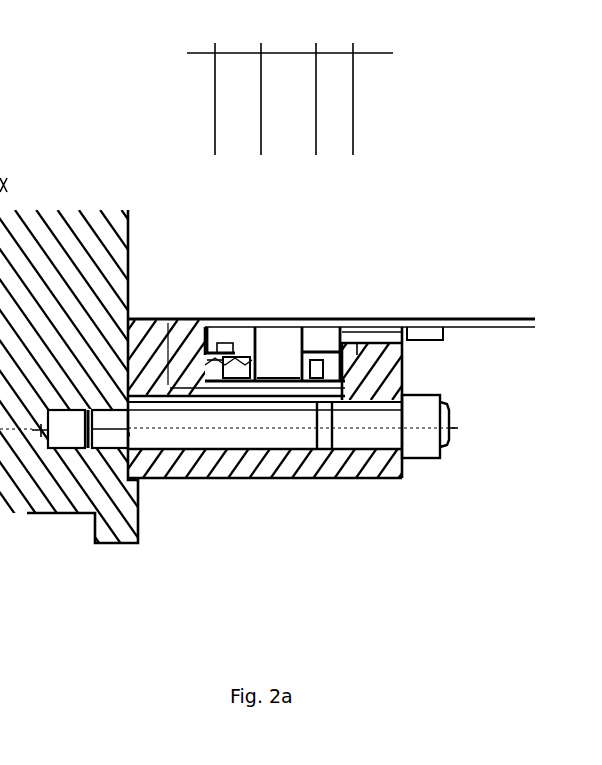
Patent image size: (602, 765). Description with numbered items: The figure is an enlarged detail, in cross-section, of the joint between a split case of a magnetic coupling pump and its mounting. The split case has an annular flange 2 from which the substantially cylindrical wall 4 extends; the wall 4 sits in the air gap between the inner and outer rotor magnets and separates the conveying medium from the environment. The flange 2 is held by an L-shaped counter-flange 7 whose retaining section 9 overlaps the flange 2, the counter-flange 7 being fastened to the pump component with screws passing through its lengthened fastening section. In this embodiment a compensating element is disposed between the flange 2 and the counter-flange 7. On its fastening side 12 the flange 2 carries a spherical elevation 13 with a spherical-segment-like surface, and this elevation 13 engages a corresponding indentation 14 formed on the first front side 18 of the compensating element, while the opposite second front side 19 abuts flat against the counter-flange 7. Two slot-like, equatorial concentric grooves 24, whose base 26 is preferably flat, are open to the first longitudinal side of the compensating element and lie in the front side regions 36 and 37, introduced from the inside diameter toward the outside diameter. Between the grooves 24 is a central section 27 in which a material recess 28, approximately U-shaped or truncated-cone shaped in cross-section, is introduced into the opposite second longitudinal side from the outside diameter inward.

The flange 2 is at (152, 337).
The cylindrical wall 4 is at (483, 314).
The counter-flange 7 is at (183, 480).
The retaining section 9 is at (393, 368).
The fastening side 12 is at (183, 383).
The elevation 13 is at (210, 383).
The indentation 14 is at (205, 365).
The first front side 18 is at (200, 388).
The second front side 19 is at (357, 340).
The slot-like concentric grooves 24 is at (315, 378).
The groove base 26 is at (243, 396).
The material recess 28 is at (278, 352).
The central section 27 is at (288, 91).
The front side region 36 is at (233, 86).
The front side region 37 is at (342, 86).